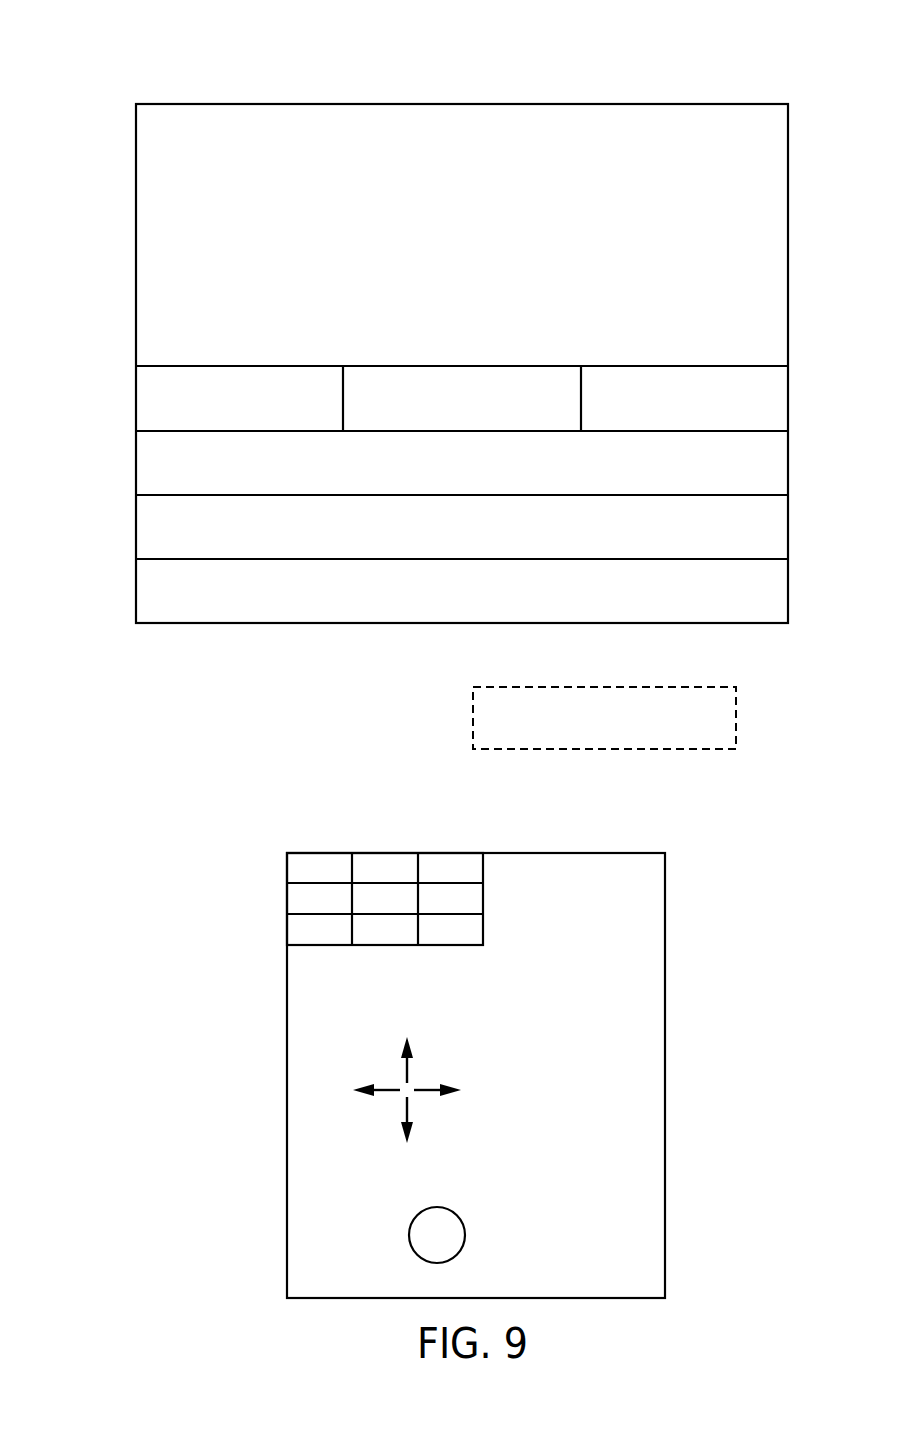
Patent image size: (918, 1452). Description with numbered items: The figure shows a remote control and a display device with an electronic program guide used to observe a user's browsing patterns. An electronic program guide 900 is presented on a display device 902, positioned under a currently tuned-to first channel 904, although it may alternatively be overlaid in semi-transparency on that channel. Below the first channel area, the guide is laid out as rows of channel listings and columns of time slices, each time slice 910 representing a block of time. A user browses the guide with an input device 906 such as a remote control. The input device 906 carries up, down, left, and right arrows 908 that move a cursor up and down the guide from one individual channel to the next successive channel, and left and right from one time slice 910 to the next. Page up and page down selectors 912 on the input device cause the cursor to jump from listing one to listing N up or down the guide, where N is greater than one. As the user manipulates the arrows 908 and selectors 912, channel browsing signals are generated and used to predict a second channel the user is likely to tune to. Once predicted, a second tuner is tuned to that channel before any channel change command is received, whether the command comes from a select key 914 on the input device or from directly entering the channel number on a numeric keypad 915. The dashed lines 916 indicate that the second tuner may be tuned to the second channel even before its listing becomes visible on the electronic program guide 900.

The electronic program guide 900 is at (142, 46).
The display device 902 is at (788, 262).
The first channel 904 is at (466, 118).
The input device 906 is at (665, 960).
The up, down, left, and right arrows 908 is at (385, 1080).
The time slice 910 is at (153, 402).
The page up and page down selectors 912 is at (620, 1032).
The select key 914 is at (409, 1235).
The numeric keypad 915 is at (385, 861).
The dashed lines 916 is at (737, 718).